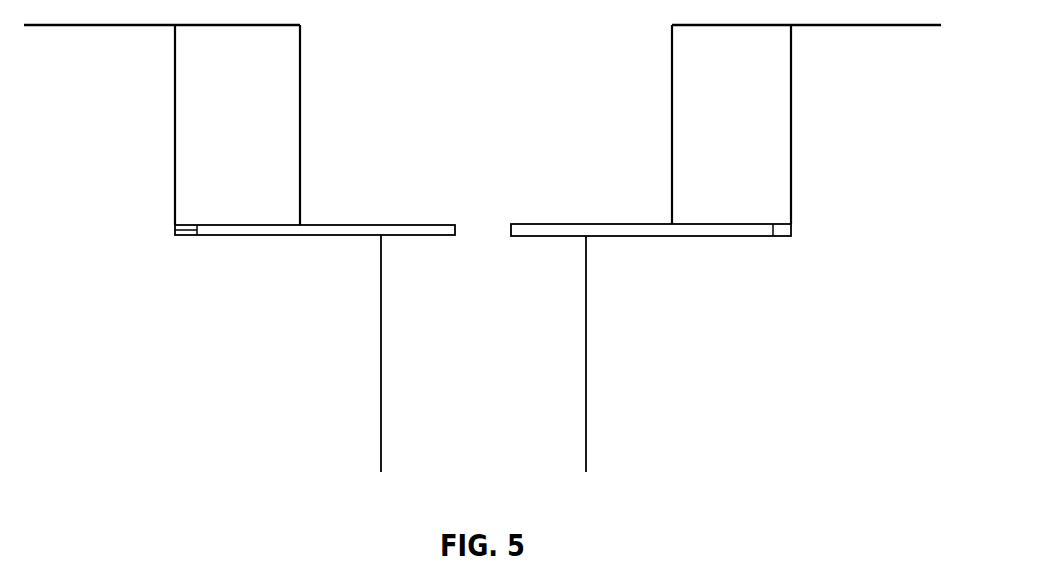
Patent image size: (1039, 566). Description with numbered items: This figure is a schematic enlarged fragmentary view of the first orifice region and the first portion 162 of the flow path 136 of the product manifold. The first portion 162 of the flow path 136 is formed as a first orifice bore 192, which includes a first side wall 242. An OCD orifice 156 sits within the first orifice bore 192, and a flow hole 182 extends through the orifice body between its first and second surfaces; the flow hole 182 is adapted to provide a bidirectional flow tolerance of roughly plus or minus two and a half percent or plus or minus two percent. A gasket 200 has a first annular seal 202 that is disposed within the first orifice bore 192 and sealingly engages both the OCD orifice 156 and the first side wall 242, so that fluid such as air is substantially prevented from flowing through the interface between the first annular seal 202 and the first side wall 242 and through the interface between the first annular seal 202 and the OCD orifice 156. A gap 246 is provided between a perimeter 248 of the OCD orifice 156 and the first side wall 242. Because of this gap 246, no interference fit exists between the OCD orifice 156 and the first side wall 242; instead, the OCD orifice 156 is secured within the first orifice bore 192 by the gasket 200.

The flow path 136 is at (588, 358).
The OCD orifice 156 is at (603, 236).
The first portion 162 is at (792, 111).
The flow hole 182 is at (455, 228).
The first orifice bore 192 is at (792, 170).
The gasket 200 is at (688, 128).
The first annular seal 202 is at (678, 92).
The first side wall 242 is at (175, 196).
The gap 246 is at (175, 232).
The perimeter 248 is at (199, 230).